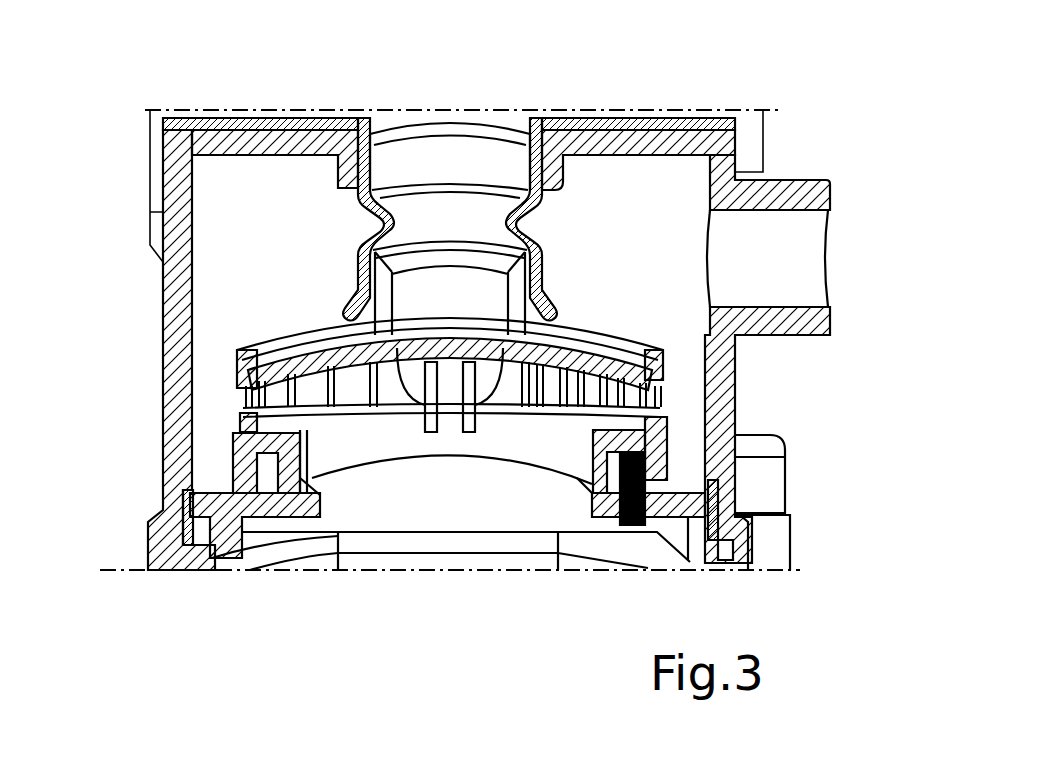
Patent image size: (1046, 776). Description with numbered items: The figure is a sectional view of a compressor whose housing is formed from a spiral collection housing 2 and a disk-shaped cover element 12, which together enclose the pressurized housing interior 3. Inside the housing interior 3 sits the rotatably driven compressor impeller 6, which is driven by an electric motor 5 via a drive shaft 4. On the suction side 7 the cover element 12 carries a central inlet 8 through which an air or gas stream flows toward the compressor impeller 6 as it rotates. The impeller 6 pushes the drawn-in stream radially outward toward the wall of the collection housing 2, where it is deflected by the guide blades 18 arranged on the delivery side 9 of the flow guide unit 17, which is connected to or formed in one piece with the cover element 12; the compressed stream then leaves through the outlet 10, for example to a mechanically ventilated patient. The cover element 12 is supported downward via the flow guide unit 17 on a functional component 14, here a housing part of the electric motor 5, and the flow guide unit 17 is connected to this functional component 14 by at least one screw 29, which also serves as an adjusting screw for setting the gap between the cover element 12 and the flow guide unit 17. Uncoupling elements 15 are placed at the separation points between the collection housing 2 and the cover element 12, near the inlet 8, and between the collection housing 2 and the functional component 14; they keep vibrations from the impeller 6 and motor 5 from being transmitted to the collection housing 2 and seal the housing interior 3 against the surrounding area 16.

The spiral collection housing 2 is at (167, 447).
The housing interior 3 is at (238, 305).
The drive shaft 4 is at (447, 407).
The electric motor 5 is at (507, 533).
The compressor impeller 6 is at (462, 418).
The suction side 7 is at (440, 296).
The inlet 8 is at (463, 120).
The delivery side 9 is at (222, 465).
The outlet 10 is at (795, 262).
The cover element 12 is at (523, 298).
The functional component 14 is at (280, 550).
The uncoupling element 15 is at (540, 165).
The surrounding area 16 is at (892, 427).
The flow guide unit 17 is at (240, 440).
The guide blades 18 is at (240, 413).
The screw 29 is at (738, 495).